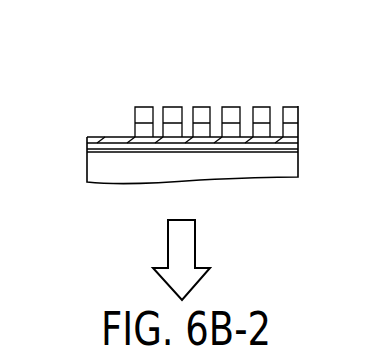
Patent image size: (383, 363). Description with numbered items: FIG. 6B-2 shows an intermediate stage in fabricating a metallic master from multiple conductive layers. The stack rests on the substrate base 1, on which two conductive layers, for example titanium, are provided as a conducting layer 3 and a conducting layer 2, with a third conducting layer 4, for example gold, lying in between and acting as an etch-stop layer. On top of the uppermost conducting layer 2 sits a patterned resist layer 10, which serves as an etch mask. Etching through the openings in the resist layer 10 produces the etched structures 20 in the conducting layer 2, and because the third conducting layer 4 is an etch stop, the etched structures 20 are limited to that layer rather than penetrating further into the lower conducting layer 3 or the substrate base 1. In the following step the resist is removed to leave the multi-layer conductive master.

The substrate base 1 is at (288, 167).
The conducting layer 2 is at (288, 128).
The conducting layer 3 is at (85, 147).
The third conducting layer 4 is at (85, 137).
The resist layer 10 is at (288, 110).
The etched structures 20 is at (183, 104).